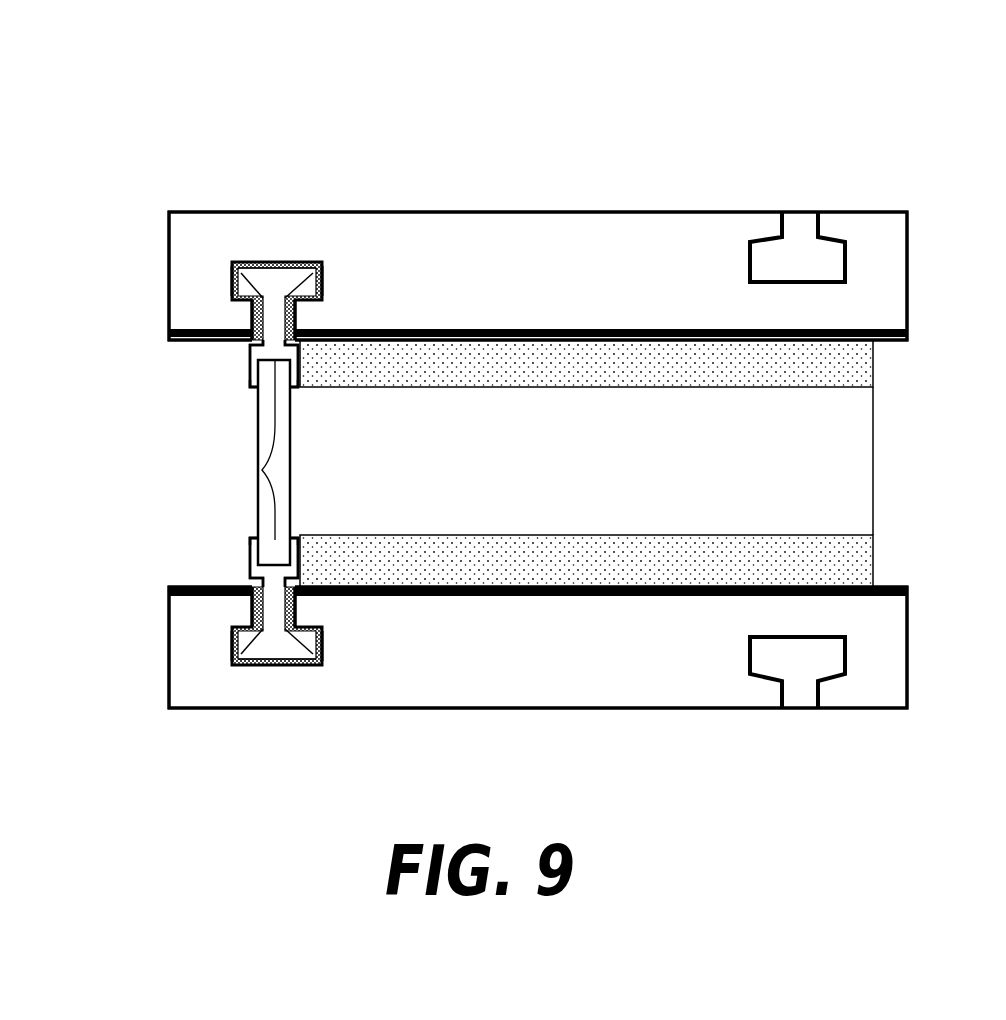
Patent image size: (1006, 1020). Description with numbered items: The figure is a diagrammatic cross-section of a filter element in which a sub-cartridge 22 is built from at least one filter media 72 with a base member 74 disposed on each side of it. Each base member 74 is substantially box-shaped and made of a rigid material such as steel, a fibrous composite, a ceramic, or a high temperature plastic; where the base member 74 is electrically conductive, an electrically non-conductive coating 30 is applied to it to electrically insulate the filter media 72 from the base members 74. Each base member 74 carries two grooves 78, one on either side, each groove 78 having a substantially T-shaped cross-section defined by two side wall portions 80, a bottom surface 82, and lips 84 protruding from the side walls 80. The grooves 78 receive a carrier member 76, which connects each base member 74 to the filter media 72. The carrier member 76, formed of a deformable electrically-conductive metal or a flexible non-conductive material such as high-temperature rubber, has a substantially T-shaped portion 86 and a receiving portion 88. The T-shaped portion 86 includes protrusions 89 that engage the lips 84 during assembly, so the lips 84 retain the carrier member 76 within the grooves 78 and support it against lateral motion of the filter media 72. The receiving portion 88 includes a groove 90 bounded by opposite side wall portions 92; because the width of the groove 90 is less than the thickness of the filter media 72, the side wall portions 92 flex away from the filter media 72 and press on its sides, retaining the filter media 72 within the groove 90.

The sub-cartridge 22 is at (203, 100).
The electrically non-conductive coating 30 is at (175, 331).
The filter media 72 is at (539, 479).
The base member 74 is at (532, 294).
The carrier member 76 is at (214, 353).
The groove 78 is at (346, 238).
The side wall portion 80 is at (232, 285).
The bottom surface 82 is at (256, 264).
The lip 84 is at (252, 318).
The T-shaped portion 86 is at (277, 283).
The receiving portion 88 is at (250, 347).
The protrusion 89 is at (228, 262).
The groove 90 is at (259, 437).
The side wall portion 92 is at (252, 388).